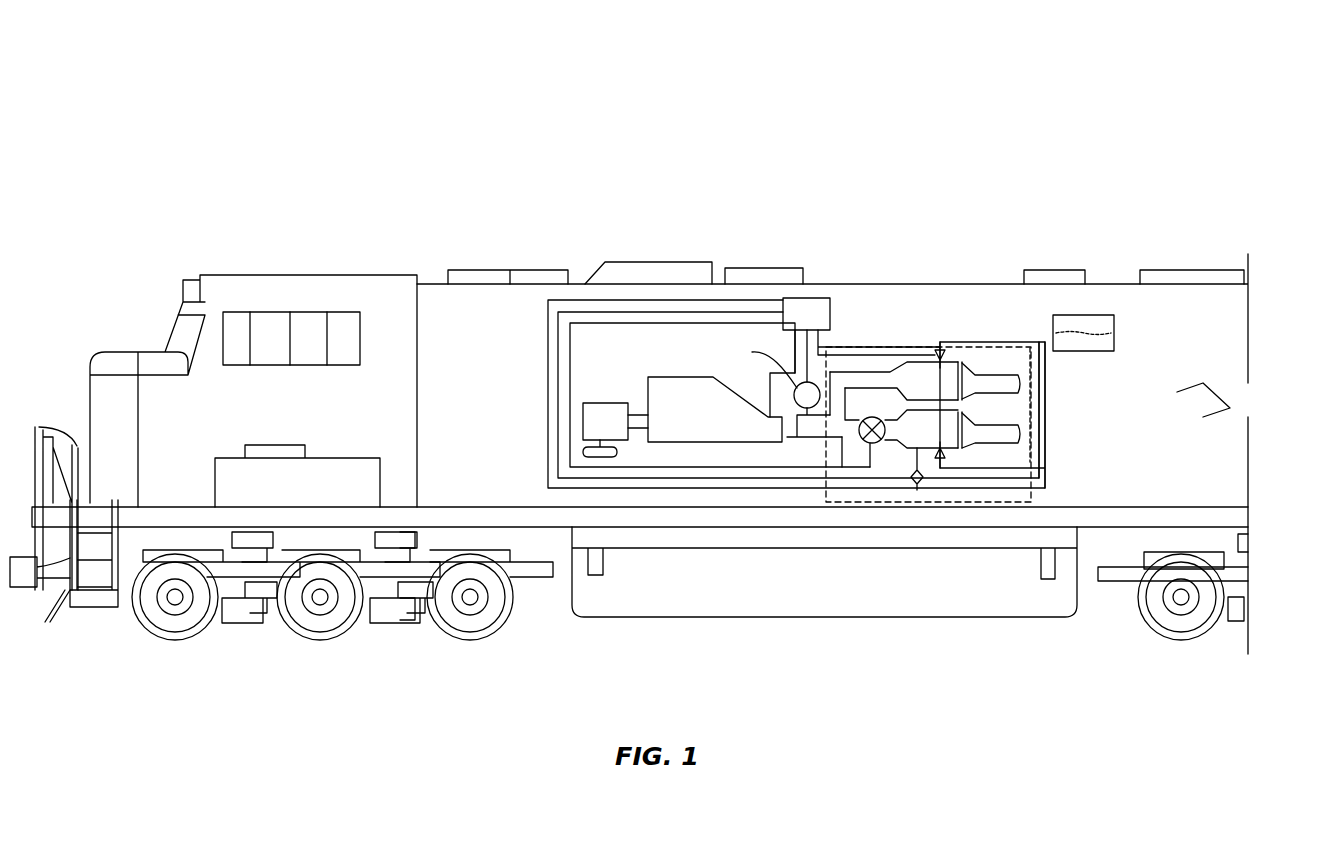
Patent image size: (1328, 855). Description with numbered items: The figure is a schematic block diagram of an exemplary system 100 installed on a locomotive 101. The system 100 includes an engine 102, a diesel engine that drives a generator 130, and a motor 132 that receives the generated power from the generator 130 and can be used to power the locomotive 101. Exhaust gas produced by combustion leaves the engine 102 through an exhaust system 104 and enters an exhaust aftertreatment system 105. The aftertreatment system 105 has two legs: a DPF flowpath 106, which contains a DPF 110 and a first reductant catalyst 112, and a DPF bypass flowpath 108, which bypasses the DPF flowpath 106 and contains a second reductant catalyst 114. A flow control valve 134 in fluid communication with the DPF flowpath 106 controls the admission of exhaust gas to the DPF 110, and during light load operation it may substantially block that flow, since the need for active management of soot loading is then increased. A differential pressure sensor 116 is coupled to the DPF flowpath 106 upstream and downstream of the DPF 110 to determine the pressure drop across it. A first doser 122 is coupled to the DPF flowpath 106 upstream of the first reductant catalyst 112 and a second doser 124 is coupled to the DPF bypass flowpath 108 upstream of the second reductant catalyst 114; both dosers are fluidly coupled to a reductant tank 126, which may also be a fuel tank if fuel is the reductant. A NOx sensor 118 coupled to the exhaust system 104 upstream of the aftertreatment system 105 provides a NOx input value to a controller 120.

The system 100 is at (1240, 190).
The locomotive 101 is at (307, 274).
The engine 102 is at (707, 425).
The exhaust system 104 is at (847, 413).
The exhaust aftertreatment system 105 is at (1033, 493).
The DPF flowpath 106 is at (897, 452).
The DPF bypass flowpath 108 is at (888, 356).
The DPF 110 is at (917, 407).
The first reductant catalyst 112 is at (977, 443).
The second reductant catalyst 114 is at (967, 386).
The differential pressure sensor 116 is at (917, 486).
The NOx sensor 118 is at (800, 410).
The controller 120 is at (808, 296).
The first doser 122 is at (942, 455).
The second doser 124 is at (944, 360).
The reductant tank 126 is at (1116, 326).
The generator 130 is at (583, 421).
The motor 132 is at (585, 452).
The flow control valve 134 is at (872, 417).